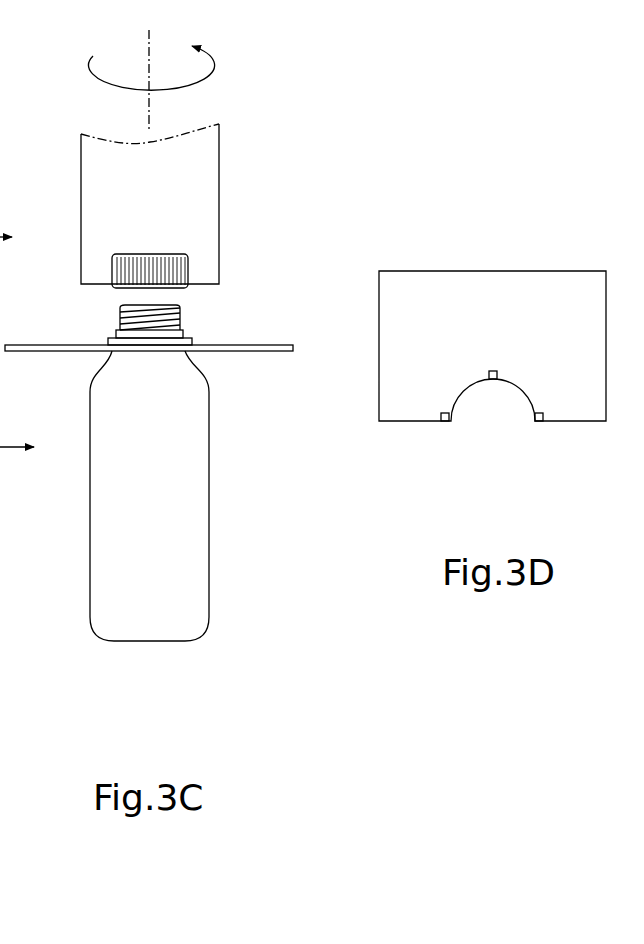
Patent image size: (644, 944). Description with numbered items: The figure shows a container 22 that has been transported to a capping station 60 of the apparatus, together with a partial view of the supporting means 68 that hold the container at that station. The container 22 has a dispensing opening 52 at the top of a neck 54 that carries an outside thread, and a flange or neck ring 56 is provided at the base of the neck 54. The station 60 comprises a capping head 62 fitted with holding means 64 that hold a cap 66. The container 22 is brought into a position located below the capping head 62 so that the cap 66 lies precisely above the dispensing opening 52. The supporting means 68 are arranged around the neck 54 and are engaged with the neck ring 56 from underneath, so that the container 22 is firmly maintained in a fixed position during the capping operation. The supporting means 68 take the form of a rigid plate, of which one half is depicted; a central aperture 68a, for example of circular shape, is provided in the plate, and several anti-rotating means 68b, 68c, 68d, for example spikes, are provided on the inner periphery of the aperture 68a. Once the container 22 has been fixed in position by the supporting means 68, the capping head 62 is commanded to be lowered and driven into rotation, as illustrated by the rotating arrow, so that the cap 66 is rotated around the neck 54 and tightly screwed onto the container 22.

In FIG. 3C, the container 22 is at (176, 681).
In FIG. 3C, the dispensing opening 52 is at (142, 298).
In FIG. 3C, the neck 54 is at (183, 320).
In FIG. 3C, the neck ring 56 is at (138, 346).
In FIG. 3C, the station 60 is at (265, 181).
In FIG. 3C, the capping head 62 is at (219, 204).
In FIG. 3C, the holding means 64 is at (193, 267).
In FIG. 3C, the cap 66 is at (148, 253).
In FIG. 3C, the supporting means 68 is at (262, 351).
In FIG. 3D, the supporting means 68 is at (420, 270).
In FIG. 3D, the central aperture 68a is at (524, 389).
In FIG. 3D, the anti-rotating means 68b is at (450, 419).
In FIG. 3D, the anti-rotating means 68c is at (493, 381).
In FIG. 3D, the anti-rotating means 68d is at (535, 419).